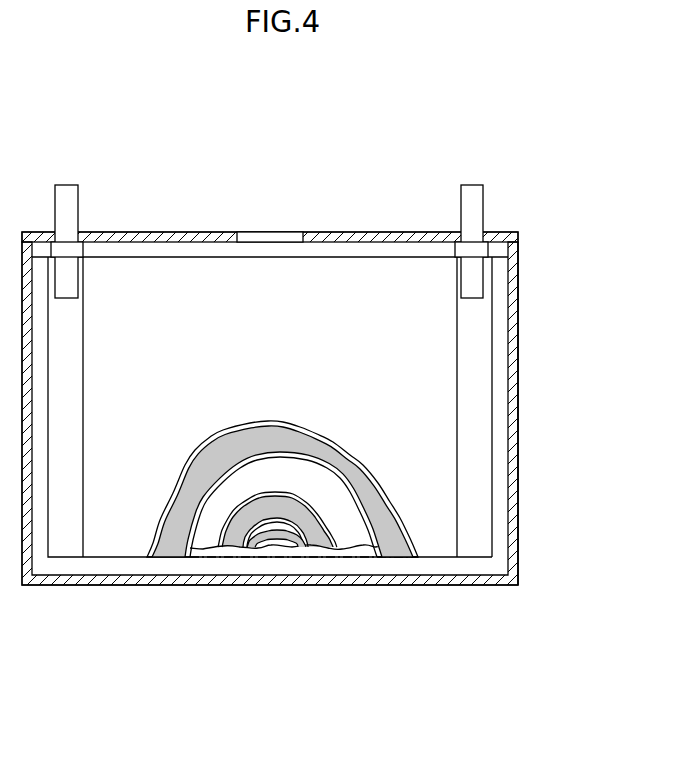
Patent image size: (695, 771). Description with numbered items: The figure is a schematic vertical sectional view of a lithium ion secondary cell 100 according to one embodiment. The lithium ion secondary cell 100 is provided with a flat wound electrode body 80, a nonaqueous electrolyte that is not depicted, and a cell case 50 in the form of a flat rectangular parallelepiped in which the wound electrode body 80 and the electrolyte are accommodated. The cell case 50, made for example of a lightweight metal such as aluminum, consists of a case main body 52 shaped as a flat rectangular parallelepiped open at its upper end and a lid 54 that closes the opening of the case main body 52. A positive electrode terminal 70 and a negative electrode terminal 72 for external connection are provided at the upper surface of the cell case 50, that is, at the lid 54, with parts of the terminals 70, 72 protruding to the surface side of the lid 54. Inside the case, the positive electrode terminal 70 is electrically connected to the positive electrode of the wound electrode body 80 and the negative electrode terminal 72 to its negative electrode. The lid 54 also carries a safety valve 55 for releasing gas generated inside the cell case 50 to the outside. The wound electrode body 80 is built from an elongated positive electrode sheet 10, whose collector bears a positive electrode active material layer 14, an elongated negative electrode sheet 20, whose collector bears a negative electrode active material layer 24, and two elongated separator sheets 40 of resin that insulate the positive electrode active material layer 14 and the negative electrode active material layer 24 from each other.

The lithium ion secondary cell 100 is at (575, 71).
The positive electrode sheet 10 is at (168, 540).
The positive electrode active material layer 14 is at (270, 558).
The negative electrode sheet 20 is at (240, 540).
The negative electrode active material layer 24 is at (277, 593).
The separator sheet 40 is at (115, 538).
The cell case 50 is at (527, 409).
The case main body 52 is at (515, 535).
The lid 54 is at (388, 238).
The safety valve 55 is at (262, 238).
The positive electrode terminal 70 is at (63, 190).
The negative electrode terminal 72 is at (467, 190).
The wound electrode body 80 is at (440, 566).